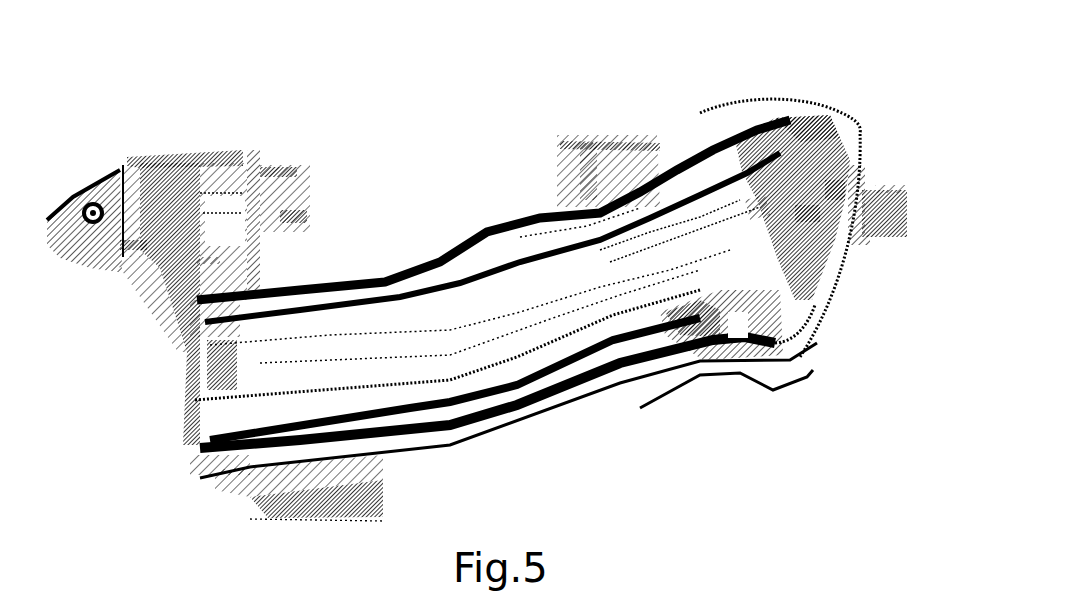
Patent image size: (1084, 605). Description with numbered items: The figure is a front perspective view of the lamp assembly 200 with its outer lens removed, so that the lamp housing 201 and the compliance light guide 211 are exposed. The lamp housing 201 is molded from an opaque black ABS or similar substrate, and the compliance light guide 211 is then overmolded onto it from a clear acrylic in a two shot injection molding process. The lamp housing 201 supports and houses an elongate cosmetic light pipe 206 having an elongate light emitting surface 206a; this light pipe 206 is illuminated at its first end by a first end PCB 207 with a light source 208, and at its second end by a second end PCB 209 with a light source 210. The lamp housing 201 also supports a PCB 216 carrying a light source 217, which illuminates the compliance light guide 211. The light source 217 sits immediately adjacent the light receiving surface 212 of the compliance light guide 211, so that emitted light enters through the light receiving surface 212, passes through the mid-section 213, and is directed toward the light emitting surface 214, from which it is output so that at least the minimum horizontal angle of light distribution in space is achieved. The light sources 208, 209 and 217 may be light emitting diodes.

The lamp assembly 200 is at (403, 110).
The lamp housing 201 is at (250, 143).
The cosmetic light pipe 206 is at (612, 345).
The light emitting surface 206a is at (516, 362).
The first end PCB 207 is at (210, 379).
The light source 208 is at (193, 420).
The second end PCB 209 is at (797, 233).
The light source 210 is at (758, 211).
The compliance light guide 211 is at (878, 168).
The light receiving surface 212 is at (833, 196).
The mid-section 213 is at (862, 239).
The light emitting surface 214 is at (911, 212).
The PCB 216 is at (823, 137).
The light source 217 is at (816, 212).